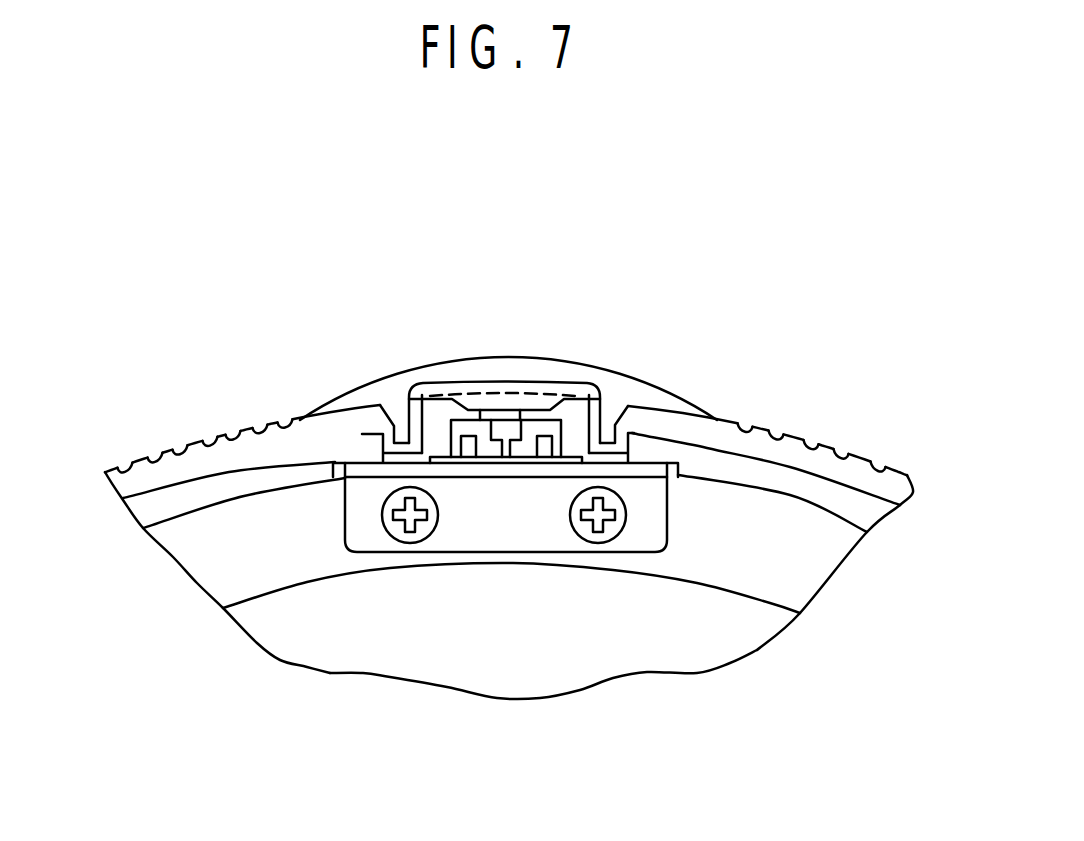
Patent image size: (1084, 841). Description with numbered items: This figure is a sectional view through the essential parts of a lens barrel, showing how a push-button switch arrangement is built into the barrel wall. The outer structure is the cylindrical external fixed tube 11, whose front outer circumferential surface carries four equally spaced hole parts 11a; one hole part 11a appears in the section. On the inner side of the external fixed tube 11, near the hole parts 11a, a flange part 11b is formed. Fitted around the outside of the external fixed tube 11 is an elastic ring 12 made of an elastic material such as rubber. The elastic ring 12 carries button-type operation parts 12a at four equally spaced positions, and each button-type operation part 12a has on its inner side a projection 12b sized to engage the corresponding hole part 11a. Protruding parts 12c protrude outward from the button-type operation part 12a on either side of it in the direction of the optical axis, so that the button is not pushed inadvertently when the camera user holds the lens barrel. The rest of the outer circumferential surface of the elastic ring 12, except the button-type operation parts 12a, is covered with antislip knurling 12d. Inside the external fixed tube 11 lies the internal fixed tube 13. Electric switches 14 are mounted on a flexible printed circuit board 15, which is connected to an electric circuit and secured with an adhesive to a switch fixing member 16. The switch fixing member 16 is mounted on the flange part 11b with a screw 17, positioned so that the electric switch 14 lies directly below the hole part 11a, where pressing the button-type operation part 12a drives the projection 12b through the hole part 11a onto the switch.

The external fixed tube 11 is at (210, 480).
The hole part 11a is at (382, 435).
The flange part 11b is at (708, 563).
The elastic ring 12 is at (795, 451).
The button-type operation part 12a is at (484, 383).
The projection 12b is at (627, 447).
The protruding part 12c is at (617, 390).
The antislip knurling 12d is at (868, 472).
The internal fixed tube 13 is at (538, 683).
The electric switch 14 is at (528, 427).
The flexible printed circuit board 15 is at (571, 457).
The switch fixing member 16 is at (367, 535).
The screw 17 is at (587, 530).